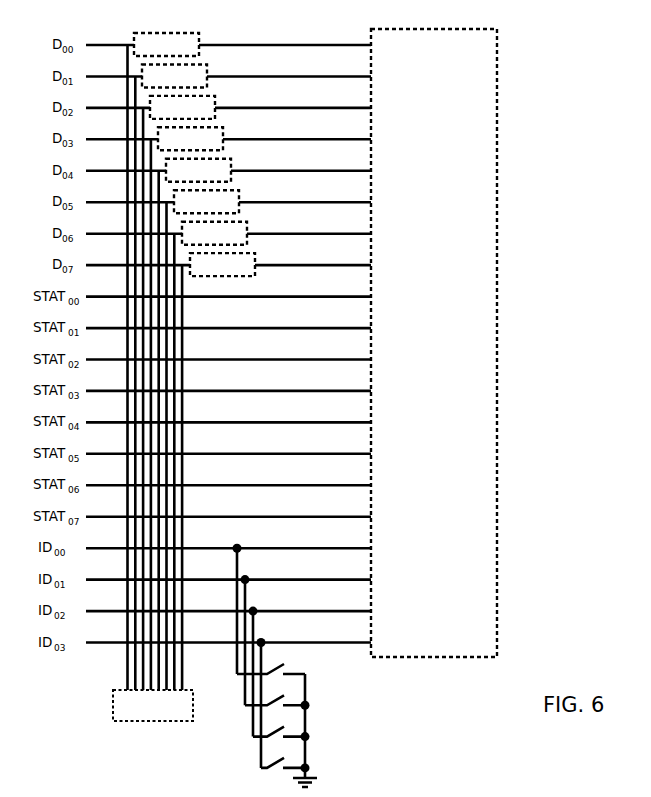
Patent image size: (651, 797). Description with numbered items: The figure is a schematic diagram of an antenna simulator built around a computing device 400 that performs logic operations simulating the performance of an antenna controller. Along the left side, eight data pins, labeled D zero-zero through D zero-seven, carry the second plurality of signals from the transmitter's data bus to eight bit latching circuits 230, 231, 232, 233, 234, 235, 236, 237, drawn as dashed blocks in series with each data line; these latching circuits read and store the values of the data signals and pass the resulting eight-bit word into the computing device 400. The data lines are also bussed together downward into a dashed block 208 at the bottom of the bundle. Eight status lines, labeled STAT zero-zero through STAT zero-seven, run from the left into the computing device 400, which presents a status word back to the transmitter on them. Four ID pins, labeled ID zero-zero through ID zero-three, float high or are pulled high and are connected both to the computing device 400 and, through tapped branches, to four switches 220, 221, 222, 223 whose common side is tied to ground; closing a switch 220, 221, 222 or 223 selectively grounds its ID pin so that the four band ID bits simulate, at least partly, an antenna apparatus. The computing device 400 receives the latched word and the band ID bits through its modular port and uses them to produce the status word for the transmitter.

The decoder 208 is at (113, 700).
The switch 220 is at (284, 668).
The switch 221 is at (284, 699).
The switch 222 is at (284, 731).
The switch 223 is at (284, 762).
The latching circuit 230 is at (199, 38).
The latching circuit 231 is at (207, 70).
The latching circuit 232 is at (215, 101).
The latching circuit 233 is at (223, 132).
The latching circuit 234 is at (231, 164).
The latching circuit 235 is at (239, 195).
The latching circuit 236 is at (247, 227).
The latching circuit 237 is at (255, 258).
The computing device 400 is at (497, 86).